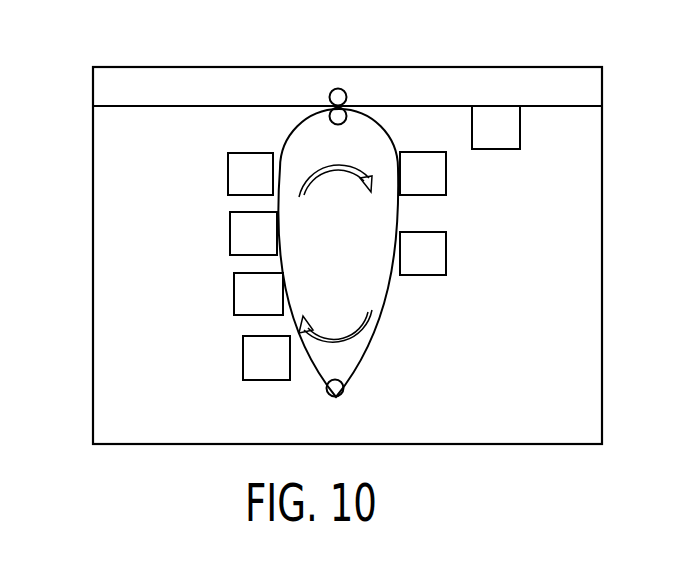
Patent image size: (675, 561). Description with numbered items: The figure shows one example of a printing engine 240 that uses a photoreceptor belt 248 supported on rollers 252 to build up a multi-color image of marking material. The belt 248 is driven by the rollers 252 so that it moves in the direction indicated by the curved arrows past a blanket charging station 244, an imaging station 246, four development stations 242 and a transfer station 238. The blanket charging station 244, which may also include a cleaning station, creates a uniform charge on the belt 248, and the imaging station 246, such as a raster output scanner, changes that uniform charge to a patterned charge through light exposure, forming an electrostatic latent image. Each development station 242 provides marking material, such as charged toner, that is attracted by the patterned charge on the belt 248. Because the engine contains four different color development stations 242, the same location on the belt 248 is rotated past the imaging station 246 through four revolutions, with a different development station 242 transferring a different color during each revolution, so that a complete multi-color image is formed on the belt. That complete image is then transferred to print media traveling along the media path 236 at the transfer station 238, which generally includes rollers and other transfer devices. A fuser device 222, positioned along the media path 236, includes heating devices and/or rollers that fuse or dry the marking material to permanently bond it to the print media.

The fuser device 222 is at (520, 141).
The media path 236 is at (155, 107).
The transfer station 238 is at (333, 106).
The printing engine 240 is at (93, 257).
The development stations 242 is at (228, 177).
The blanket charging station 244 is at (446, 189).
The imaging station 246 is at (446, 256).
The photoreceptor belt 248 is at (388, 322).
The rollers 252 is at (346, 115).